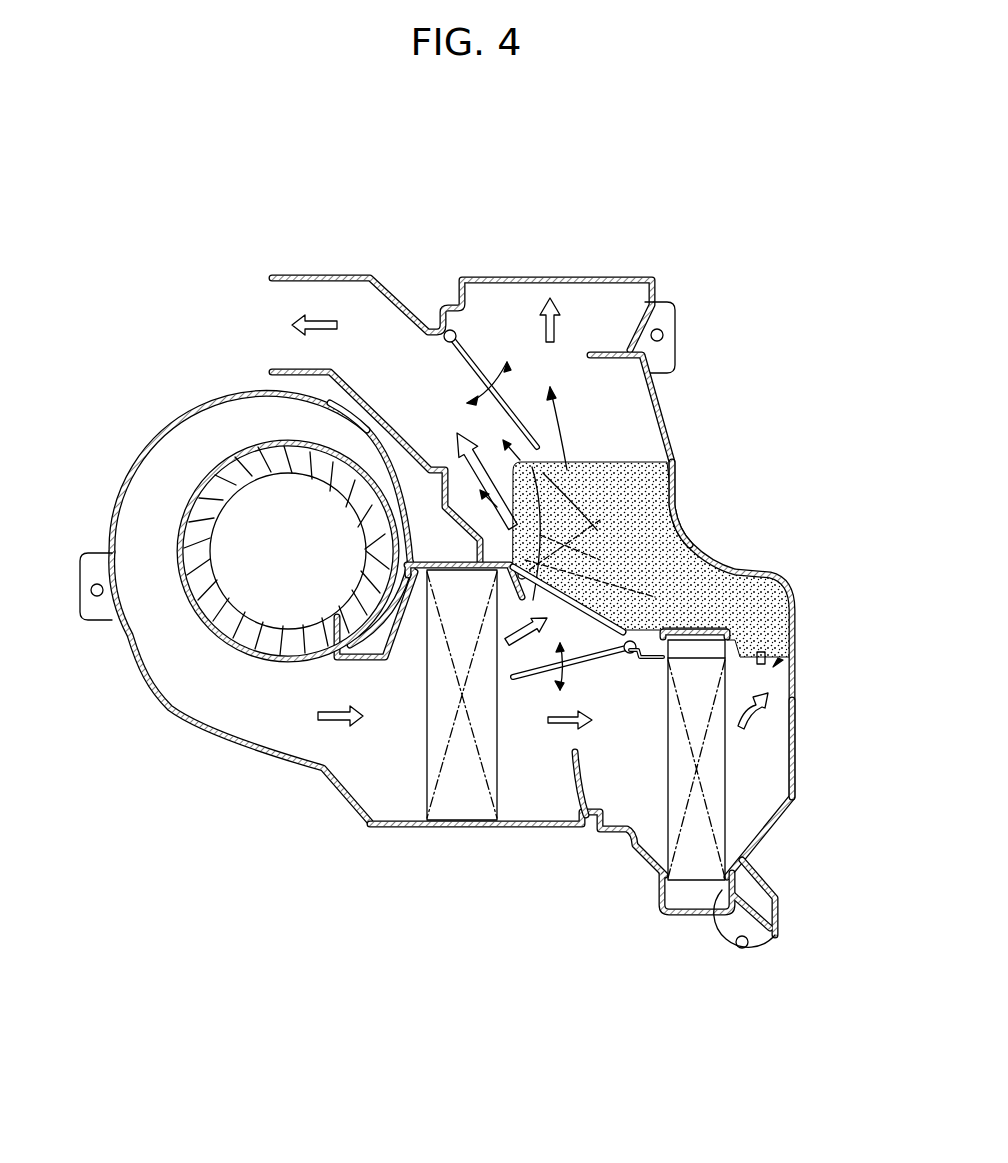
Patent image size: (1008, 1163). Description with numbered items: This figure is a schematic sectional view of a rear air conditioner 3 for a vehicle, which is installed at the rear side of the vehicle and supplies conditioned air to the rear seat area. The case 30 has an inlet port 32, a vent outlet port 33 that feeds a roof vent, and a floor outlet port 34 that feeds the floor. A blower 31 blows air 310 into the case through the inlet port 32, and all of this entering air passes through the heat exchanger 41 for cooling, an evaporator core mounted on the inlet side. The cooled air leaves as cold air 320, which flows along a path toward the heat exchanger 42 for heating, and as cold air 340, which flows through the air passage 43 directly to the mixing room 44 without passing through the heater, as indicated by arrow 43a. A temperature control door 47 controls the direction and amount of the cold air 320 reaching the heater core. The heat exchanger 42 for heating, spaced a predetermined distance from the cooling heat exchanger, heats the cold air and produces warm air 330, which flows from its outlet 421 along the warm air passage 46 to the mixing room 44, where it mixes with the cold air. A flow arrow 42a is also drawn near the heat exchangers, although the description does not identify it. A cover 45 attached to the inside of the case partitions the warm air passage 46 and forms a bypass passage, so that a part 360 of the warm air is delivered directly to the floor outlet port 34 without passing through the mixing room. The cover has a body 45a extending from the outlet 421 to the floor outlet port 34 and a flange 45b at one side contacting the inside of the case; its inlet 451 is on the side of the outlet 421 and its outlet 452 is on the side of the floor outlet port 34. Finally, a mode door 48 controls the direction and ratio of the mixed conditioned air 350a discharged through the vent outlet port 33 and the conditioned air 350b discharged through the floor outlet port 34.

The rear air conditioner 3 is at (733, 245).
The case 30 is at (152, 697).
The blower 31 is at (213, 497).
The inlet port 32 is at (377, 730).
The vent outlet port 33 is at (622, 290).
The floor outlet port 34 is at (277, 310).
The heat exchanger for cooling 41 is at (457, 803).
The heat exchanger for heating 42 is at (692, 870).
The air flow passage through heater 42a is at (558, 430).
The air passage 43 is at (513, 653).
The arrow 43a is at (657, 593).
The mixing room 44 is at (560, 517).
The cover 45 is at (777, 663).
The body 45a is at (680, 560).
The flange 45b is at (617, 460).
The warm air passage 46 is at (767, 603).
The temperature control door 47 is at (590, 660).
The mode door 48 is at (473, 357).
The air 310 is at (327, 717).
The cold air 320 is at (560, 727).
The warm air 330 is at (757, 723).
The cold air 340 is at (507, 642).
The conditioned air 350a is at (552, 300).
The conditioned air 350b is at (322, 320).
The part of the warm air 360 is at (510, 527).
The outlet of the heat exchanger for heating 421 is at (730, 773).
The inlet of the cover 451 is at (780, 675).
The outlet of the cover 452 is at (413, 467).